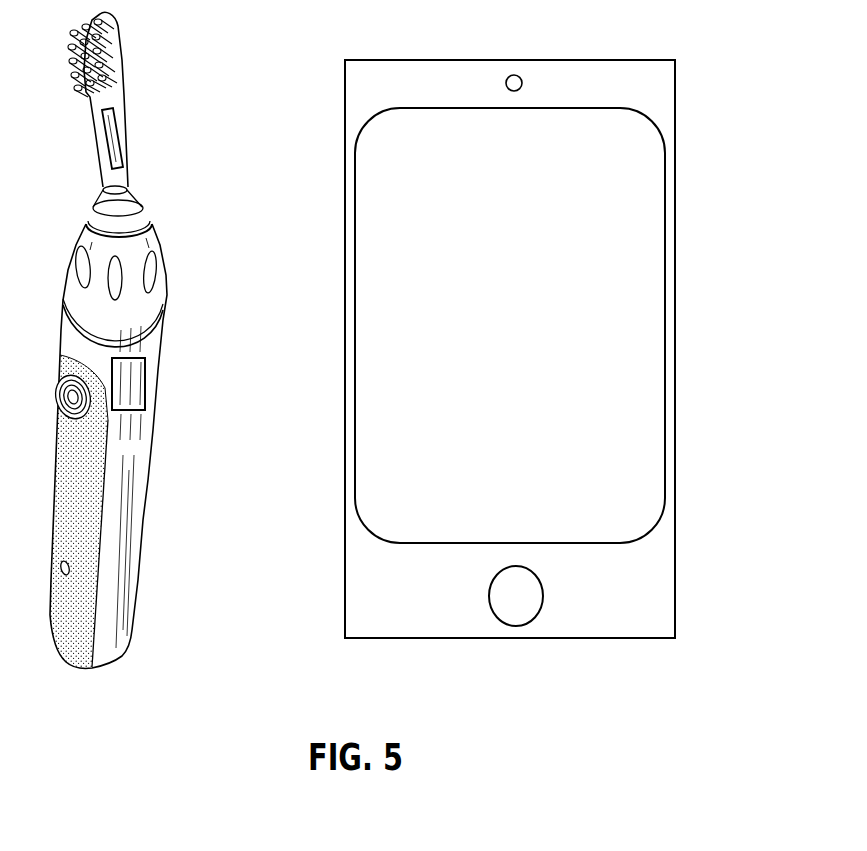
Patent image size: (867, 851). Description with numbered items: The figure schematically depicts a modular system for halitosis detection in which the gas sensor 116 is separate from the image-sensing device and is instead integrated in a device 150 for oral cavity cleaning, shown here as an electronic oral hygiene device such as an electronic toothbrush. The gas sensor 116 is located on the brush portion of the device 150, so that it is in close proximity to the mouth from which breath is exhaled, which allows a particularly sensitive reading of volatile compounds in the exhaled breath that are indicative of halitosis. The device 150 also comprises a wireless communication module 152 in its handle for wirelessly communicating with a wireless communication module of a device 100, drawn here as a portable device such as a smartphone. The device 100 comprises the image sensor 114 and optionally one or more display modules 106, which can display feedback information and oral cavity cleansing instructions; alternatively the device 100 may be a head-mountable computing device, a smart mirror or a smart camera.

The device 100 is at (676, 386).
The display module 106 is at (650, 266).
The image sensor 114 is at (513, 75).
The gas sensor 116 is at (122, 143).
The device for oral cavity cleaning 150 is at (145, 536).
The wireless communication module 152 is at (148, 386).